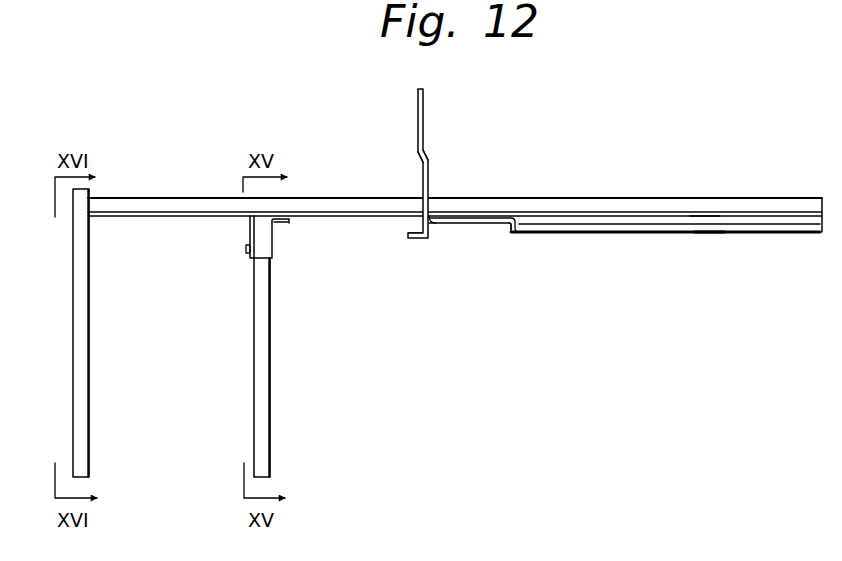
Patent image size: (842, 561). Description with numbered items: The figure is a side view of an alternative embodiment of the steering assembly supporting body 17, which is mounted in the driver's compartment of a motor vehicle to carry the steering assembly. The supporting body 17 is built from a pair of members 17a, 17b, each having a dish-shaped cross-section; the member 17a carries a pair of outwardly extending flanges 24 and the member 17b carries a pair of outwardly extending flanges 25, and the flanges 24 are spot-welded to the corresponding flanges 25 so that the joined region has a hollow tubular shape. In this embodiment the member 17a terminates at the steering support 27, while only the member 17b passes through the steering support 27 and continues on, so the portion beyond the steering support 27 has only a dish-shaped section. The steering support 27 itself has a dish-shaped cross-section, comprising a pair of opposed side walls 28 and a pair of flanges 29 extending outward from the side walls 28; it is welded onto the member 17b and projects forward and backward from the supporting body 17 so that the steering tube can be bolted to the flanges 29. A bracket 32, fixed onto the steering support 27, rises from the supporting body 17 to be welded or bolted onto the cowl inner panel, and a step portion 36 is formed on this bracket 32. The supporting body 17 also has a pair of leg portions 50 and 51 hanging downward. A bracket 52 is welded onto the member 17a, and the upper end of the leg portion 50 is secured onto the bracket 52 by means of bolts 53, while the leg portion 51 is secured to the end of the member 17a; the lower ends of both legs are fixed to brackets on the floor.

The steering assembly supporting body 17 is at (513, 197).
The member 17a is at (617, 198).
The member 17b is at (605, 234).
The flange 24 is at (704, 214).
The flange 25 is at (709, 232).
The steering support 27 is at (478, 226).
The side wall 28 is at (437, 226).
The flange 29 is at (414, 240).
The bracket 32 is at (420, 169).
The step portion 36 is at (426, 156).
The leg portion 50 is at (270, 360).
The leg portion 51 is at (88, 350).
The bracket 52 is at (263, 243).
The bolt 53 is at (246, 249).